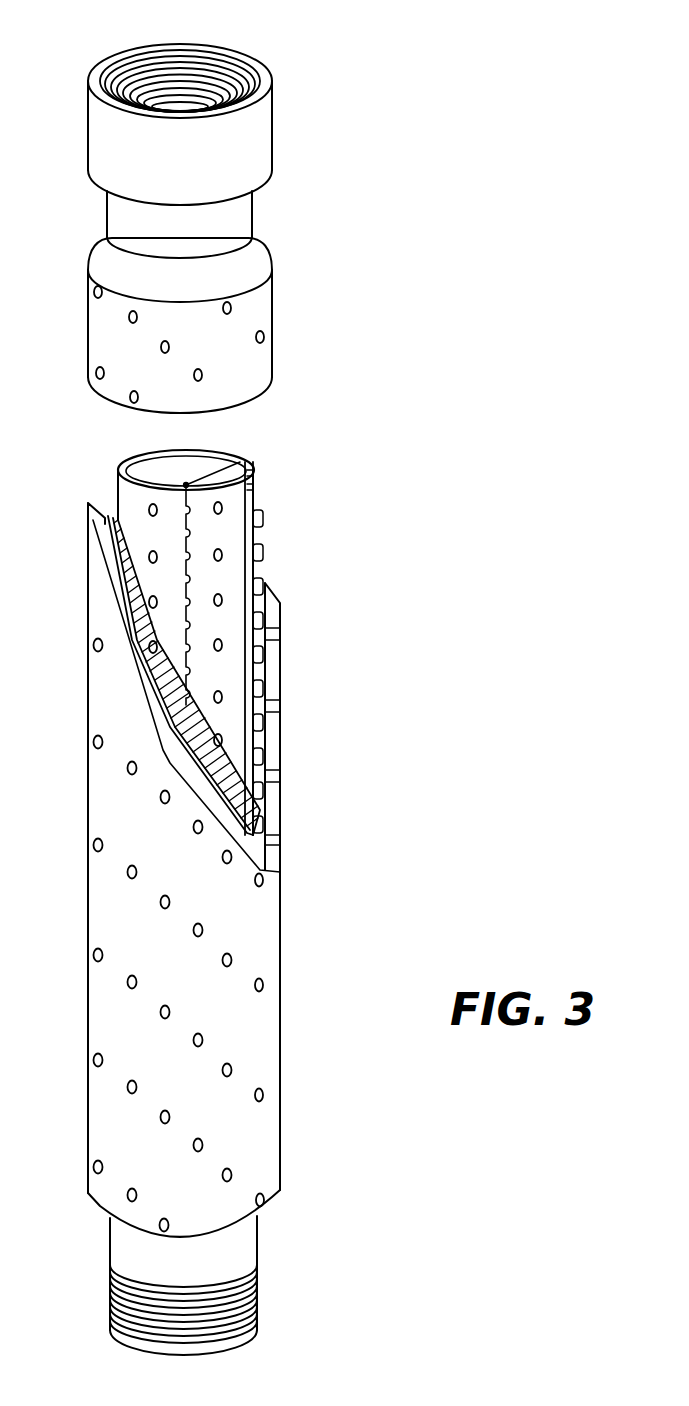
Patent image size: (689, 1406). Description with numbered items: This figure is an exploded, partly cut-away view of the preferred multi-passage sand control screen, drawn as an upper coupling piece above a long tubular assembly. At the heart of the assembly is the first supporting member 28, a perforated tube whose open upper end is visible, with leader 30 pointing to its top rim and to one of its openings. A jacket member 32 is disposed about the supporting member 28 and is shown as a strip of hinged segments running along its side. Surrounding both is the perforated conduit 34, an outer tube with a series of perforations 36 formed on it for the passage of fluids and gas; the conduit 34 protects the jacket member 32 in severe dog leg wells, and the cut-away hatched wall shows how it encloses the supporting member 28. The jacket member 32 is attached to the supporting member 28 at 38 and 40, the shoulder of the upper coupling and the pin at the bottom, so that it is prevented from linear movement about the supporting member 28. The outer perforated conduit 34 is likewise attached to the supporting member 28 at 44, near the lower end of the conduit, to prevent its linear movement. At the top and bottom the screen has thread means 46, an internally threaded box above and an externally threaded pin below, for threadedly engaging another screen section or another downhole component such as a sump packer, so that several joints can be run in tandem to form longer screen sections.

The first supporting member 28 is at (130, 463).
The holes of inner tube 30 is at (221, 505).
The jacket member 32 is at (265, 532).
The perforated conduit 34 is at (280, 955).
The perforations 36 is at (260, 1093).
The attachment point 38 is at (252, 237).
The attachment point 40 is at (257, 1220).
The attachment point 44 is at (278, 1193).
The thread means 46 is at (200, 63).